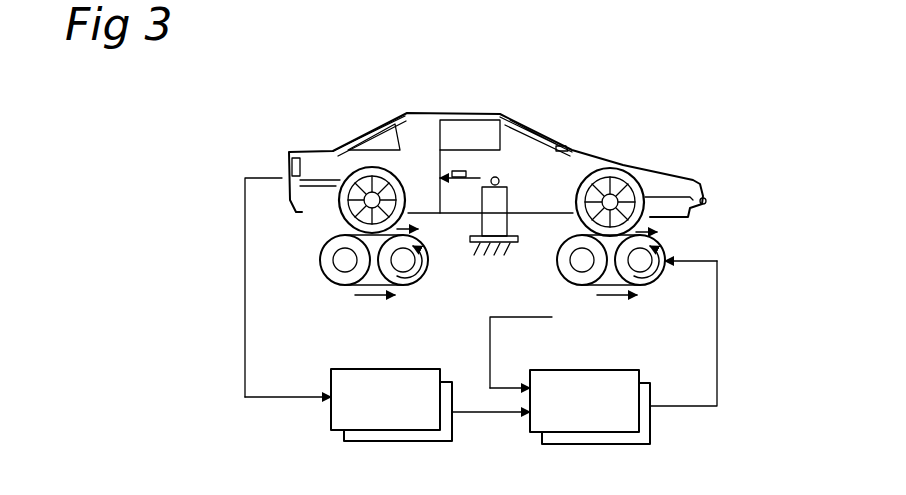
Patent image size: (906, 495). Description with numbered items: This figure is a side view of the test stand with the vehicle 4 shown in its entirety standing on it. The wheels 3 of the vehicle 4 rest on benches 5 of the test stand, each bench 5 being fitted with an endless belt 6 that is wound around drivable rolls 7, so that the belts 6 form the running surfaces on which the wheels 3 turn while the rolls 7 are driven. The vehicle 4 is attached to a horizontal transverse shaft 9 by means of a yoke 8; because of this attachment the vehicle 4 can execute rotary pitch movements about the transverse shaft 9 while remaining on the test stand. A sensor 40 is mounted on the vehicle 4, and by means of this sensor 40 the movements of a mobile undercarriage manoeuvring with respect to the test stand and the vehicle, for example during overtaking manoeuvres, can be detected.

The wheels 3 is at (342, 178).
The vehicle 4 is at (600, 140).
The benches 5 is at (318, 247).
The endless belts 6 is at (355, 286).
The drivable rolls 7 is at (326, 268).
The yoke 8 is at (545, 213).
The horizontal transverse shaft 9 is at (497, 202).
The sensor 40 is at (706, 201).